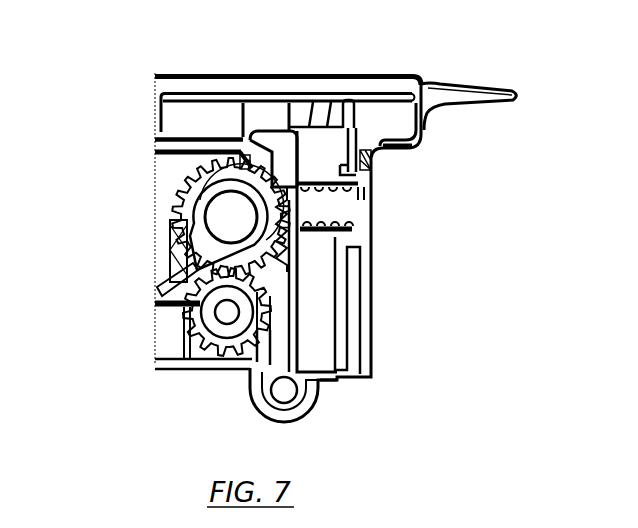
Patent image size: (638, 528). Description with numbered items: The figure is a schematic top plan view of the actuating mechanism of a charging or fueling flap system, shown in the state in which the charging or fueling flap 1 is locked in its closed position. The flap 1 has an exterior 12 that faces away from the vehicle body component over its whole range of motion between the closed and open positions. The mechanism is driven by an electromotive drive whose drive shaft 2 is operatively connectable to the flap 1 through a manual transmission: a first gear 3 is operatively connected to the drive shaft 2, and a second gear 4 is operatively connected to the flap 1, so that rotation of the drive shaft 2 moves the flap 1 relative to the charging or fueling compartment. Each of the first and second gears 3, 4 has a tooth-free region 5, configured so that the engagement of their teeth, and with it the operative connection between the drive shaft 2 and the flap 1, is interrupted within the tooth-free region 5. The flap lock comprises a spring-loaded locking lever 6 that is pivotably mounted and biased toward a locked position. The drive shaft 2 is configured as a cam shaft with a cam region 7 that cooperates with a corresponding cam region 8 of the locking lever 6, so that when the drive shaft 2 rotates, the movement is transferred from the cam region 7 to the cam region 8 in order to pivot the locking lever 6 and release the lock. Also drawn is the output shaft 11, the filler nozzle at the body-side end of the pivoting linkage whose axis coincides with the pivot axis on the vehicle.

The charging or fueling flap 1 is at (207, 85).
The drive shaft 2 is at (222, 313).
The first gear 3 is at (157, 288).
The second gear 4 is at (205, 173).
The tooth-free region 5 is at (183, 258).
The locking lever 6 is at (287, 166).
The cam region of the drive shaft 7 is at (262, 321).
The cam region of the locking lever 8 is at (263, 289).
The output shaft 11 is at (232, 219).
The exterior of the charging or fueling flap 12 is at (340, 77).